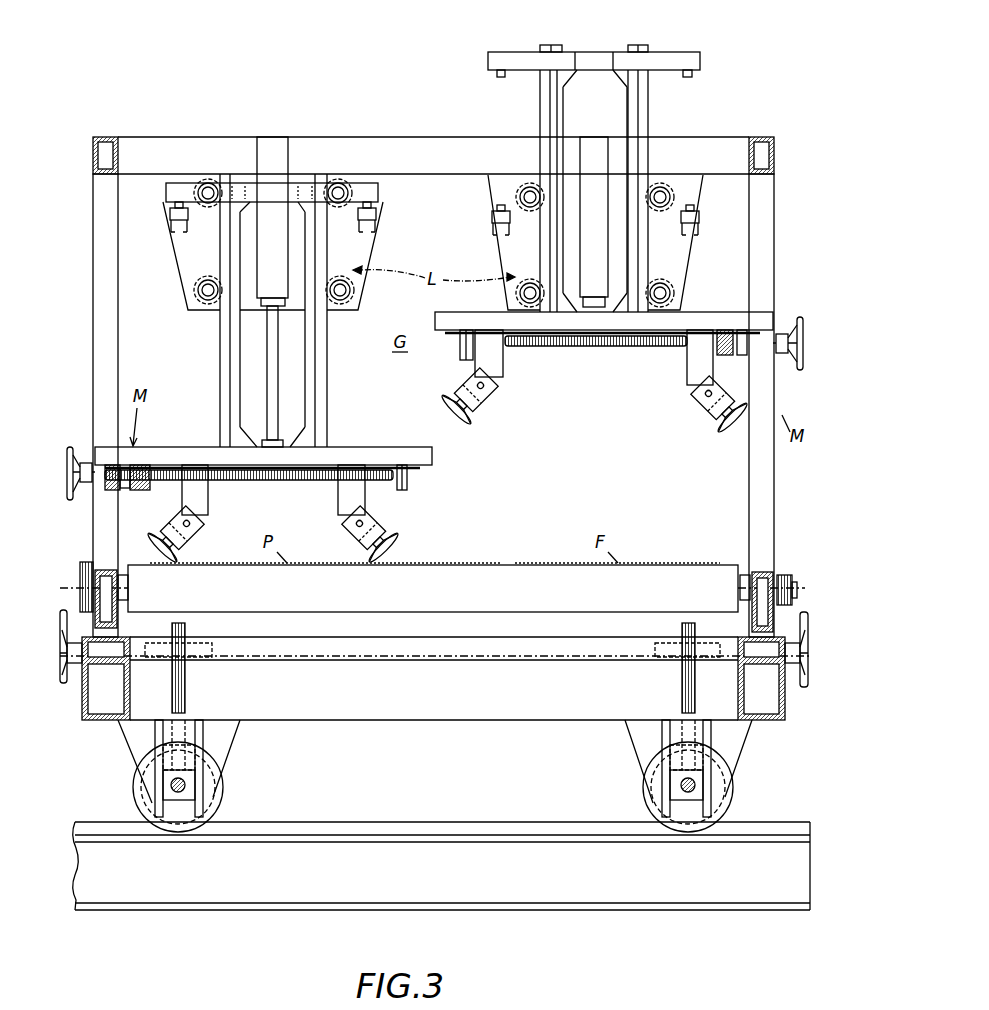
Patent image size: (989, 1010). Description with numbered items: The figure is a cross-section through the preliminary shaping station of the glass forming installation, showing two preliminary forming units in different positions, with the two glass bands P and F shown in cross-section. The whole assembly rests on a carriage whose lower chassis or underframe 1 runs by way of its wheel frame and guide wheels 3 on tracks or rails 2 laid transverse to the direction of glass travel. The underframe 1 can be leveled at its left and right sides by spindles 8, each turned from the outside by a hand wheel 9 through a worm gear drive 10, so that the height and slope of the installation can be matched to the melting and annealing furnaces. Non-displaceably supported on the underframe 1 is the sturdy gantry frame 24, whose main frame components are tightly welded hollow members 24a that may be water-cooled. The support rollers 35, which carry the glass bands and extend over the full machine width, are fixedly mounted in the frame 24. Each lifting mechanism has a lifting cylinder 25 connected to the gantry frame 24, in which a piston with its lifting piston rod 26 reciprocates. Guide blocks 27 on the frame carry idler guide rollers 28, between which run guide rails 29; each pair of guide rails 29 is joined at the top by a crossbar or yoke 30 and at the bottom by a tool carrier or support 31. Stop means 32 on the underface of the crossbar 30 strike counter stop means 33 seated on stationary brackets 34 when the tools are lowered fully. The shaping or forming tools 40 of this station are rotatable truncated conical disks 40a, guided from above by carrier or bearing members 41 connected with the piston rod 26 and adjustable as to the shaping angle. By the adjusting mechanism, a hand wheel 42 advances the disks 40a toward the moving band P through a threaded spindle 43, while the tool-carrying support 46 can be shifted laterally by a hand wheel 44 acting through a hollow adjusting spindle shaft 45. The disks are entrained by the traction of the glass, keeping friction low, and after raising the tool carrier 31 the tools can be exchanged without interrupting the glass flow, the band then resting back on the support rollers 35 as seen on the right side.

The lower chassis or underframe 1 is at (425, 712).
The tracks or rails 2 is at (446, 845).
The guide wheels 3 is at (222, 792).
The spindles 8 is at (188, 680).
The hand wheel 9 is at (71, 684).
The worm gear drive 10 is at (170, 658).
The gantry frame 24 is at (420, 150).
The hollow members 24a is at (100, 137).
The lifting cylinder 25 is at (282, 160).
The lifting piston rod 26 is at (272, 398).
The guide blocks 27 is at (190, 263).
The idler guide rollers 28 is at (208, 207).
The guide rails 29 is at (648, 105).
The crossbar or yoke 30 is at (600, 62).
The tool carrier or support 31 is at (162, 447).
The stop means 32 is at (503, 86).
The counter stop means 33 is at (492, 210).
The stationary brackets 34 is at (492, 222).
The support rollers 35 is at (448, 580).
The shaping or forming tools 40 is at (718, 410).
The truncated conical disks 40a is at (165, 546).
The carrier or bearing members 41 is at (205, 500).
The hand wheel 42 is at (69, 447).
The threaded spindle 43 is at (300, 481).
The hand wheel 44 is at (72, 500).
The hollow shaft or adjusting spindle shaft 45 is at (140, 488).
The support 46 is at (407, 490).